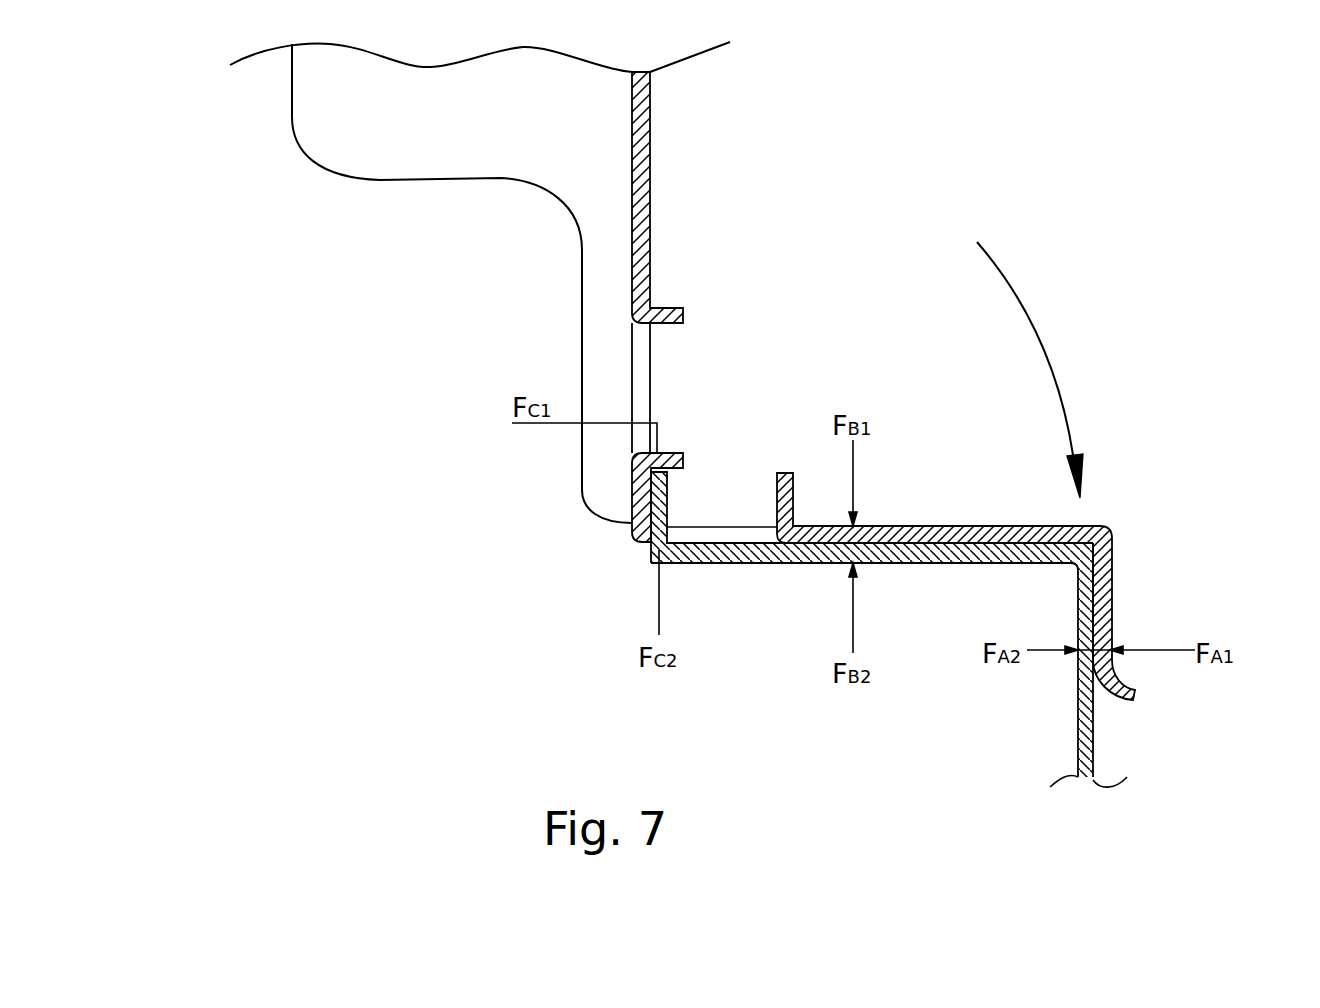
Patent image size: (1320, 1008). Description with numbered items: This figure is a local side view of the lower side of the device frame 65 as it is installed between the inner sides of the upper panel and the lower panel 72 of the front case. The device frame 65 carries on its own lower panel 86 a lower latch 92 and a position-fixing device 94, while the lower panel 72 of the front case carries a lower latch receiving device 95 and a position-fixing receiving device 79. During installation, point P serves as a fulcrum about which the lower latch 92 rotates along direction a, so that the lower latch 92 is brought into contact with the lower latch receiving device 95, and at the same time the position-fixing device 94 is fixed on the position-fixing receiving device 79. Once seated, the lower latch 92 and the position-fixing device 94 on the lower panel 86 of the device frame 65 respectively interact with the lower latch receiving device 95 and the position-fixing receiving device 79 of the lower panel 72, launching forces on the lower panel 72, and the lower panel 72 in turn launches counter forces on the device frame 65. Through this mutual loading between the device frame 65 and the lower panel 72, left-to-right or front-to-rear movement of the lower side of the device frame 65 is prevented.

The device frame 65 is at (325, 112).
The lower panel 72 is at (1087, 763).
The position-fixing receiving device 79 is at (667, 495).
The lower panel 86 is at (933, 526).
The lower latch 92 is at (1107, 592).
The position-fixing device 94 is at (673, 453).
The lower latch receiving device 95 is at (1077, 568).
The point P is at (667, 567).
The direction a is at (1030, 370).